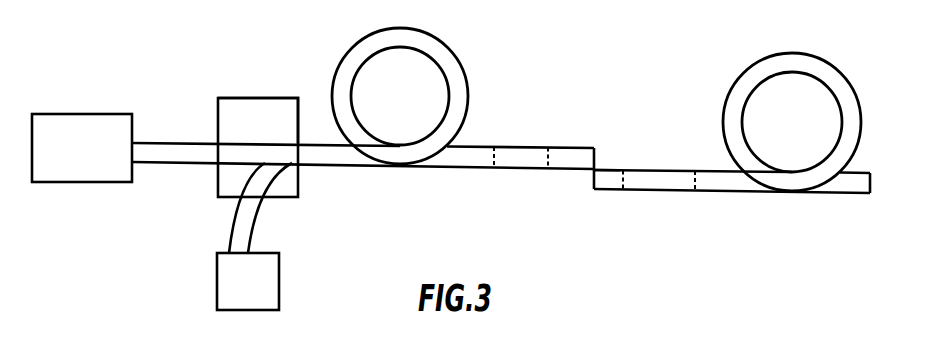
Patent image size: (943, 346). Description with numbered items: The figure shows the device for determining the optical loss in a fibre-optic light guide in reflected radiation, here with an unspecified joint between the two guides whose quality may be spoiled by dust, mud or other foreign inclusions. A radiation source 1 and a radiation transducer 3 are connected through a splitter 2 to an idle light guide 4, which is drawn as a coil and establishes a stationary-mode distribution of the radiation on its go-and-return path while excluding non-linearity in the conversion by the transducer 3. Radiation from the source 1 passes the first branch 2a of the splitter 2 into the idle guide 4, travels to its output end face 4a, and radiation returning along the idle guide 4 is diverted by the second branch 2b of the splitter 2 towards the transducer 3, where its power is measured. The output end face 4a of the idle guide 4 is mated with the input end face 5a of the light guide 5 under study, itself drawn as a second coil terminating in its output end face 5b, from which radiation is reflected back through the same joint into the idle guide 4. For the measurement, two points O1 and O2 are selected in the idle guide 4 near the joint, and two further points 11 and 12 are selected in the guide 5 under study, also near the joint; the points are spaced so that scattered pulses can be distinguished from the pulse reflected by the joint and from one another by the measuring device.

The radiation source 1 is at (97, 113).
The splitter 2 is at (266, 98).
The first branch of the splitter 2a is at (258, 120).
The second branch of the splitter 2b is at (264, 208).
The radiation transducer 3 is at (281, 275).
The idle light guide 4 is at (467, 79).
The output end face of the idle guide 4a is at (581, 173).
The light guide under study 5 is at (733, 88).
The input end face of the light guide under study 5a is at (607, 193).
The output end face of the guide under study 5b is at (869, 195).
The first measuring point in the guide under study 11 is at (624, 170).
The second measuring point in the guide under study 12 is at (696, 171).
The first measuring point in the idle guide O1 is at (495, 147).
The second measuring point in the idle guide O2 is at (549, 147).